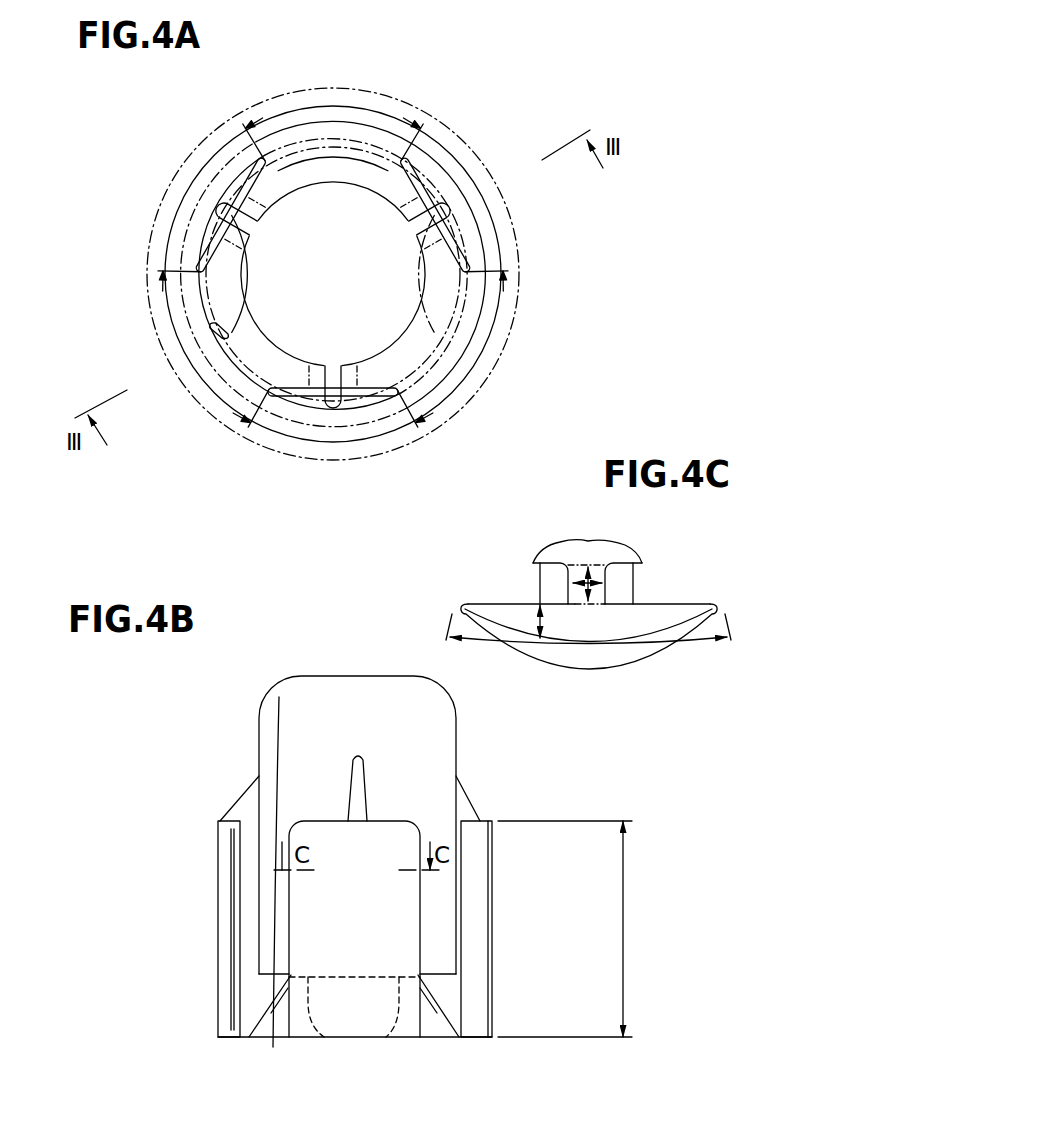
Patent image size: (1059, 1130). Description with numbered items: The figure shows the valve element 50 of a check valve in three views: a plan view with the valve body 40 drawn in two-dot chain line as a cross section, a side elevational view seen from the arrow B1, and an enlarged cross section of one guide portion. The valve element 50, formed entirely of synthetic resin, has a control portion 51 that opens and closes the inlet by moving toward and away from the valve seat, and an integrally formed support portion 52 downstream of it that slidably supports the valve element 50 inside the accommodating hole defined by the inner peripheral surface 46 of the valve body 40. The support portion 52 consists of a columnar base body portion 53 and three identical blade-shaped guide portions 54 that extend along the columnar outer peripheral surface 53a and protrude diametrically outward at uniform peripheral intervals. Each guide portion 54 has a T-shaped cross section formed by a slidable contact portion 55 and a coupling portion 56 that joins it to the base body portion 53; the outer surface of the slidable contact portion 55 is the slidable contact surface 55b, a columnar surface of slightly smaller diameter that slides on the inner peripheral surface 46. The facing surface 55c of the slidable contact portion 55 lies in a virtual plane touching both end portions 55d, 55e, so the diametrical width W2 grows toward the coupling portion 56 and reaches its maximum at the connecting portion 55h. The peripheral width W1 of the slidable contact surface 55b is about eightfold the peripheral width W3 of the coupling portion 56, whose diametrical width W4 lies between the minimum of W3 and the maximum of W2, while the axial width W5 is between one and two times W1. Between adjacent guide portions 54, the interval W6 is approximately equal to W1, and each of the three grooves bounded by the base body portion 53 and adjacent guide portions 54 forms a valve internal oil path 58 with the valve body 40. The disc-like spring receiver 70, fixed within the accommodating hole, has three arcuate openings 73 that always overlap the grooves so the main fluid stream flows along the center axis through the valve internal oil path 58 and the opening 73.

In FIG. 4A, the valve body 40 is at (212, 432).
In FIG. 4A, the inner peripheral surface 46 is at (218, 338).
In FIG. 4A, the valve element 50 is at (177, 133).
In FIG. 4B, the valve element 50 is at (227, 691).
In FIG. 4A, the control portion 51 is at (305, 200).
In FIG. 4B, the control portion 51 is at (310, 692).
In FIG. 4A, the support portion 52 is at (393, 187).
In FIG. 4B, the support portion 52 is at (473, 779).
In FIG. 4B, the base body portion 53 is at (394, 790).
In FIG. 4C, the base body portion 53 is at (615, 552).
In FIG. 4B, the outer peripheral surface 53a is at (297, 778).
In FIG. 4A, the guide portion 54 is at (335, 280).
In FIG. 4B, the guide portion 54 is at (208, 850).
In FIG. 4C, the guide portion 54 is at (590, 600).
In FIG. 4A, the slidable contact portion 55 is at (237, 192).
In FIG. 4B, the slidable contact portion 55 is at (394, 840).
In FIG. 4C, the slidable contact portion 55 is at (512, 610).
In FIG. 4A, the slidable contact surface 55b is at (233, 217).
In FIG. 4B, the slidable contact surface 55b is at (231, 989).
In FIG. 4C, the slidable contact surface 55b is at (558, 643).
In FIG. 4A, the facing surface 55c is at (403, 230).
In FIG. 4B, the facing surface 55c is at (236, 987).
In FIG. 4C, the facing surface 55c is at (484, 603).
In FIG. 4A, the end portion 55d is at (407, 163).
In FIG. 4B, the end portion 55d is at (422, 934).
In FIG. 4A, the end portion 55e is at (237, 162).
In FIG. 4B, the end portion 55e is at (314, 917).
In FIG. 4C, the end portion 55e is at (465, 605).
In FIG. 4C, the connecting portion 55h is at (596, 606).
In FIG. 4A, the coupling portion 56 is at (242, 223).
In FIG. 4B, the coupling portion 56 is at (248, 894).
In FIG. 4C, the coupling portion 56 is at (610, 577).
In FIG. 4A, the valve internal oil path 58 is at (343, 155).
In FIG. 4A, the spring receiver 70 is at (520, 313).
In FIG. 4A, the opening 73 is at (372, 160).
In FIG. 4A, the arrow B1 is at (332, 468).
In FIG. 4C, the width W1 is at (663, 656).
In FIG. 4C, the width W2 is at (542, 620).
In FIG. 4C, the width W3 is at (604, 585).
In FIG. 4C, the width W4 is at (572, 583).
In FIG. 4B, the width W5 is at (623, 920).
In FIG. 4A, the interval W6 is at (315, 105).